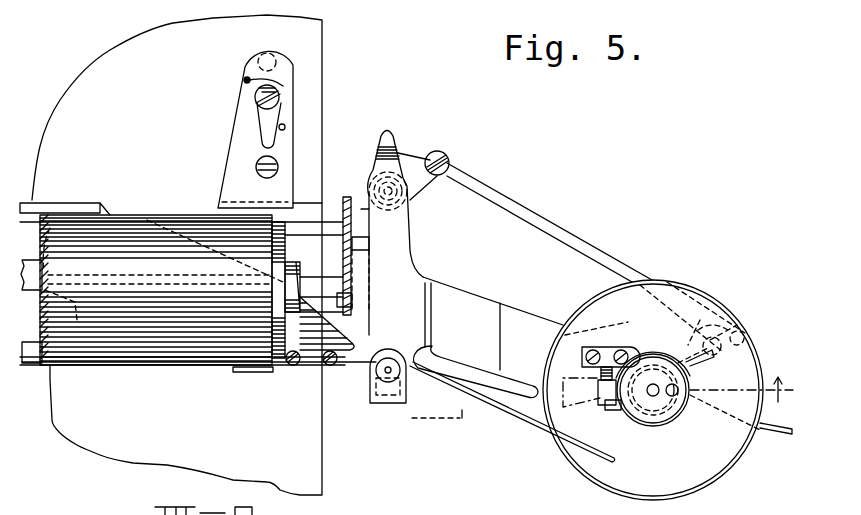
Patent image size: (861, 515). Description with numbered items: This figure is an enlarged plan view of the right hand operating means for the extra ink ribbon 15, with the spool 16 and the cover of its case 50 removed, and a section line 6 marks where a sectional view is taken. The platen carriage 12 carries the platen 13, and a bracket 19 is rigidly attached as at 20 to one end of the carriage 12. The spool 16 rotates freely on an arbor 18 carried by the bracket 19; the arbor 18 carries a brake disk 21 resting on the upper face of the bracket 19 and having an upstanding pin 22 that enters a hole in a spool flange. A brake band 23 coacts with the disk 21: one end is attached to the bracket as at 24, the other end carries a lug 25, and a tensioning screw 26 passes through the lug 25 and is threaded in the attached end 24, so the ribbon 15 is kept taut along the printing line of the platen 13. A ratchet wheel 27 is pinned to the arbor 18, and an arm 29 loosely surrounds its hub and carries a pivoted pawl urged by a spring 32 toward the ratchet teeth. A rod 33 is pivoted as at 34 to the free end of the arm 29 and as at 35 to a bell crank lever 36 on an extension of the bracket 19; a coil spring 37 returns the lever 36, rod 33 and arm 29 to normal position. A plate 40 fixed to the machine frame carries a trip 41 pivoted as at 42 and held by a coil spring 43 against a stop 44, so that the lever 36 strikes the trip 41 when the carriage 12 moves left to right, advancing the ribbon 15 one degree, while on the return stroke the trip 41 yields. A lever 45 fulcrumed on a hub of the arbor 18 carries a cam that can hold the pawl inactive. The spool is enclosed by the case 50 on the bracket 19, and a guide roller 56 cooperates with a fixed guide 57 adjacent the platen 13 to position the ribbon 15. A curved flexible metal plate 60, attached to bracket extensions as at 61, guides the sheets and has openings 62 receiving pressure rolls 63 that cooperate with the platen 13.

The section line 6- 6 is at (592, 401).
The platen carriage 12 is at (347, 197).
The platen 13 is at (157, 215).
The extra ink ribbon 15 is at (143, 365).
The spool 16 is at (522, 422).
The arbor 18 is at (653, 398).
The bracket 19 is at (492, 303).
The attachment 20 is at (369, 244).
The brake disk 21 is at (640, 410).
The upstanding pin 22 is at (679, 395).
The brake band 23 is at (682, 418).
The attached end of band 24 is at (615, 350).
The lug 25 is at (598, 395).
The tensioning screw 26 is at (601, 373).
The ratchet wheel 27 is at (655, 355).
The arm 29 is at (758, 360).
The spring 32 is at (696, 335).
The rod 33 is at (583, 244).
The pivotal connection 34 is at (741, 332).
The pivotal connection 35 is at (445, 157).
The bell crank lever 36 is at (391, 141).
The coil spring 37 is at (400, 176).
The plate 40 is at (292, 54).
The trip 41 is at (262, 130).
The pivot 42 is at (286, 86).
The coil spring 43 is at (249, 78).
The stop 44 is at (286, 127).
The lever 45 is at (785, 434).
The case 50 is at (693, 500).
The guide roller 56 is at (388, 352).
The fixed guide 57 is at (249, 372).
The curved flexible metal plate 60 is at (62, 203).
The attachment 61 is at (308, 366).
The openings 62 is at (33, 260).
The pressure rolls 63 is at (32, 291).